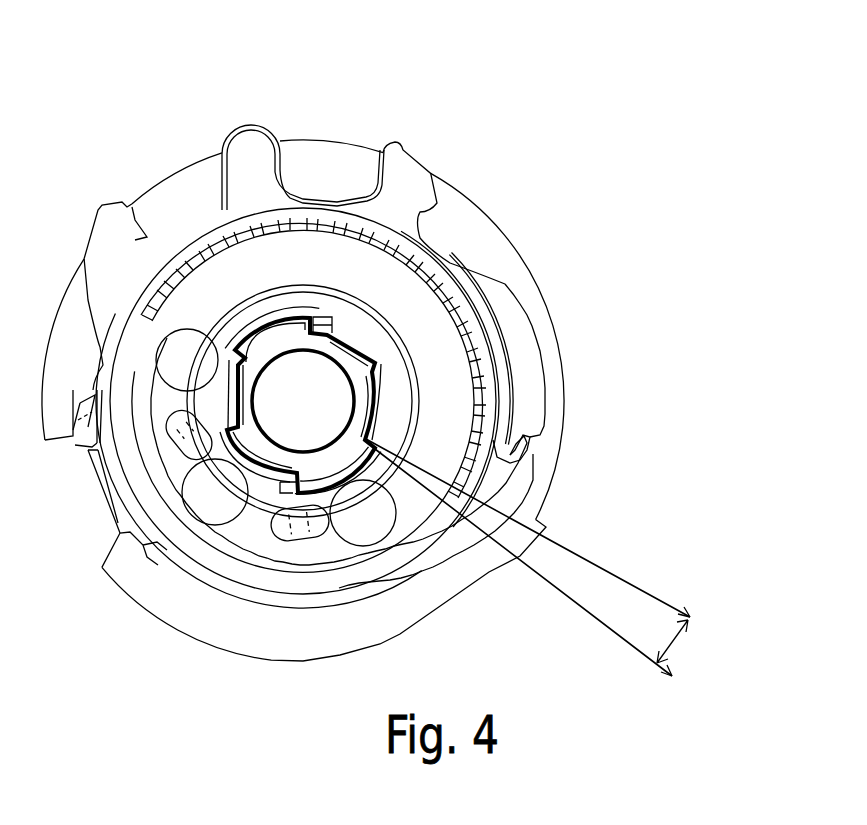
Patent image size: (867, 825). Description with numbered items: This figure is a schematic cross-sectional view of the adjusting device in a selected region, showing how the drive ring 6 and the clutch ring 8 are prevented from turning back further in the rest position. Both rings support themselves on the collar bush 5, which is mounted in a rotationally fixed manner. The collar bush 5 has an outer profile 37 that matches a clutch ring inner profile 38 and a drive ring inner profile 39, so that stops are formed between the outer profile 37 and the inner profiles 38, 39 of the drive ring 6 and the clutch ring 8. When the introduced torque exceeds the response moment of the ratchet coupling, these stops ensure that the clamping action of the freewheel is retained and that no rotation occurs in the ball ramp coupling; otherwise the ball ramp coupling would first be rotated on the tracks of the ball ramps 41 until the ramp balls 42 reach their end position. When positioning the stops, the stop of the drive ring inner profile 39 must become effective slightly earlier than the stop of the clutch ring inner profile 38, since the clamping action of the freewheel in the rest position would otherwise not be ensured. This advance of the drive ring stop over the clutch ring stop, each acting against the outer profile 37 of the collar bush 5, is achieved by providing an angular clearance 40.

The collar bush 5 is at (335, 350).
The drive ring 6 is at (407, 193).
The clutch ring 8 is at (413, 322).
The outer profile 37 is at (262, 338).
The clutch ring inner profile 38 is at (387, 388).
The drive ring inner profile 39 is at (222, 398).
The angular clearance 40 is at (680, 632).
The ball ramps 41 is at (175, 438).
The ramp balls 42 is at (213, 497).